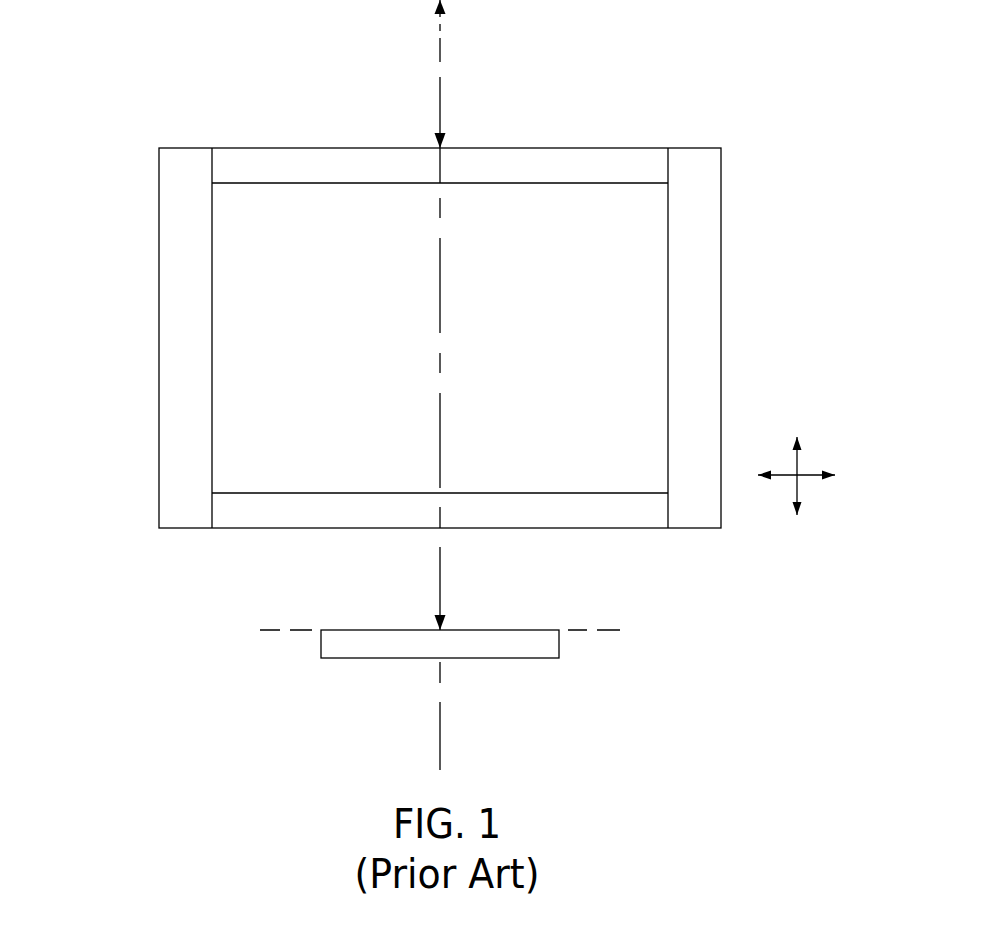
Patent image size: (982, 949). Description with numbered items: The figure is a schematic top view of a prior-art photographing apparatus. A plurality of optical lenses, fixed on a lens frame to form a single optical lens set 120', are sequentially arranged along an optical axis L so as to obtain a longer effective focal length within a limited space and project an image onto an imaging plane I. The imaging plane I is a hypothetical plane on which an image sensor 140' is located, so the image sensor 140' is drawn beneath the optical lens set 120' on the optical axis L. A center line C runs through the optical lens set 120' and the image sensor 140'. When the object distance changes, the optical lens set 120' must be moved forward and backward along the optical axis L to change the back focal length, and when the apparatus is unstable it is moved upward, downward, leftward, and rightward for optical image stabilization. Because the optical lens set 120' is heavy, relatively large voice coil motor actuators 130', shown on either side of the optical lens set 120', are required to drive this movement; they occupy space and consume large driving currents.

The optical axis / center line C is at (439, 38).
The optical lens set 120' is at (440, 299).
The actuator 130' is at (435, 338).
The imaging plane I is at (284, 626).
The image sensor 140' is at (475, 668).
The optical axis L is at (439, 722).